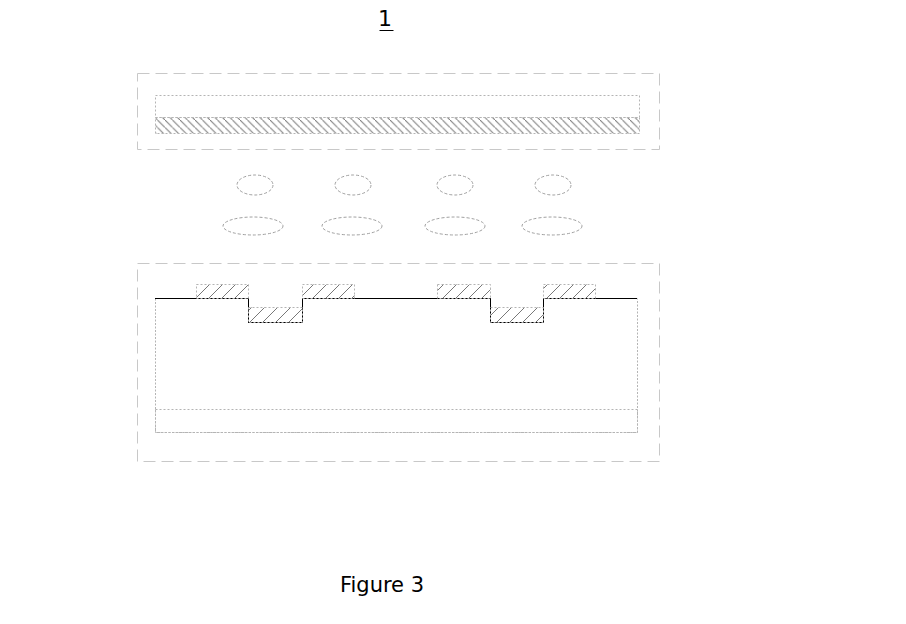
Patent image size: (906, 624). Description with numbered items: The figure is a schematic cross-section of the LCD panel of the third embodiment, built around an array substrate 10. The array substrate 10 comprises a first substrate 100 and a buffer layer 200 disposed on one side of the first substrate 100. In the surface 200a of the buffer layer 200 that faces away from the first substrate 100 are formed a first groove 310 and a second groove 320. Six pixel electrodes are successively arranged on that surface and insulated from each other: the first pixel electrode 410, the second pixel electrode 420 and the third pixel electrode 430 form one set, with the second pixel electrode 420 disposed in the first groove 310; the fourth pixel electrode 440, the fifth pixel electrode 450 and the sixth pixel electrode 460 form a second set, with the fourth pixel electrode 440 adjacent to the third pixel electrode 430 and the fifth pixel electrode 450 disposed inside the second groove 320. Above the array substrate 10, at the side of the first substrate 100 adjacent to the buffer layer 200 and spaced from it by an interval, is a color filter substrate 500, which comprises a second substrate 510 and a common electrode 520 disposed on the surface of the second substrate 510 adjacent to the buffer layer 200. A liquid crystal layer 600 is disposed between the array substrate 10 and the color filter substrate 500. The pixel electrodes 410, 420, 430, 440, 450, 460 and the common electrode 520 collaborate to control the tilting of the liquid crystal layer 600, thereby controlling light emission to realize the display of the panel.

The array substrate 10 is at (659, 291).
The first substrate 100 is at (628, 426).
The buffer layer 200 is at (631, 364).
The surface 200a is at (169, 298).
The first groove 310 is at (277, 297).
The second groove 320 is at (513, 297).
The first pixel electrode 410 is at (210, 288).
The second pixel electrode 420 is at (273, 320).
The third pixel electrode 430 is at (330, 288).
The fourth pixel electrode 440 is at (458, 288).
The fifth pixel electrode 450 is at (522, 320).
The sixth pixel electrode 460 is at (573, 288).
The color filter substrate 500 is at (659, 112).
The second substrate 510 is at (157, 104).
The common electrode 520 is at (157, 127).
The liquid crystal layer 600 is at (553, 185).